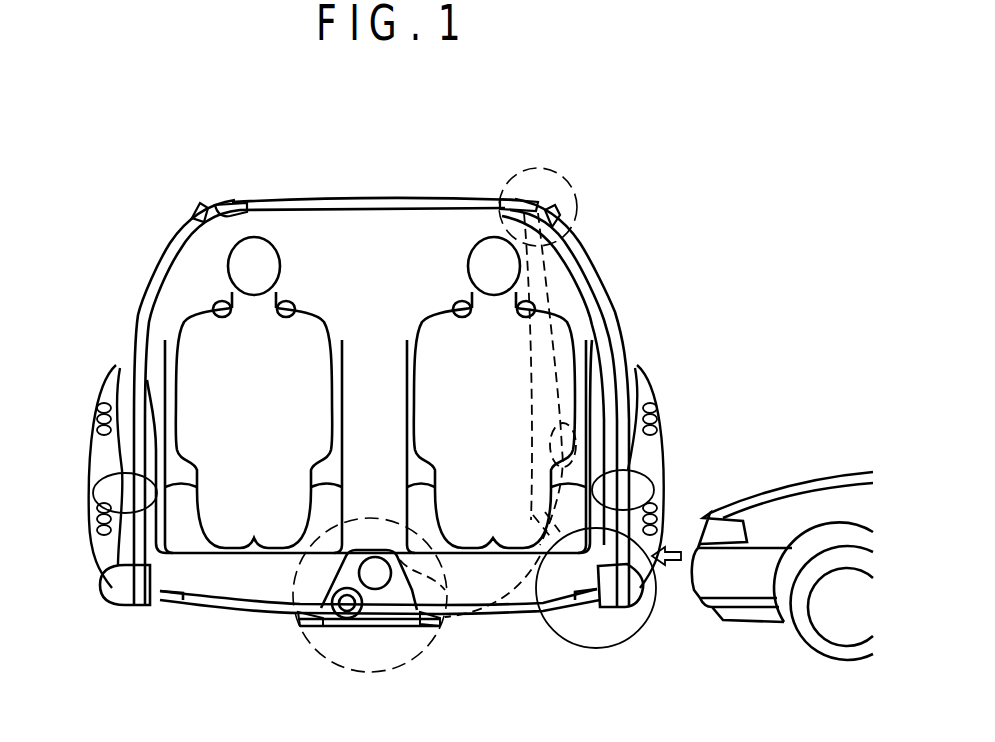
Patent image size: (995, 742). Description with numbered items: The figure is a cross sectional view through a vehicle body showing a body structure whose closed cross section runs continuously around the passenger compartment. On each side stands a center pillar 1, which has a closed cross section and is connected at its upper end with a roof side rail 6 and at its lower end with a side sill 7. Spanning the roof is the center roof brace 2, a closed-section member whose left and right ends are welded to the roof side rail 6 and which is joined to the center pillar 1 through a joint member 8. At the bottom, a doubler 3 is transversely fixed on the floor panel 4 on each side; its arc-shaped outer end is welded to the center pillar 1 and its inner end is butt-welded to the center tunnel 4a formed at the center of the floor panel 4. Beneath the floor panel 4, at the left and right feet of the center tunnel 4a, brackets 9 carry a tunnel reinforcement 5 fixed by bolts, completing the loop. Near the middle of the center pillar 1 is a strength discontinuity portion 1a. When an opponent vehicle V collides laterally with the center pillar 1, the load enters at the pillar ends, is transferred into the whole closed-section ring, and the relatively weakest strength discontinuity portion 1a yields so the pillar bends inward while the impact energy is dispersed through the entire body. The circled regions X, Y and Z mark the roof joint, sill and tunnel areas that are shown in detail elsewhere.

The center pillar 1 is at (136, 313).
The strength discontinuity portion 1a is at (100, 458).
The center roof brace 2 is at (452, 200).
The doubler 3 is at (257, 605).
The floor panel 4 is at (540, 616).
The center tunnel 4a is at (445, 592).
The tunnel reinforcement 5 is at (376, 628).
The roof side rail 6 is at (193, 209).
The side sill 7 is at (143, 600).
The joint member 8 is at (232, 212).
The bracket 9 is at (316, 628).
The opponent vehicle V is at (781, 480).
The region X is at (580, 222).
The region Y is at (618, 652).
The region Z is at (338, 668).